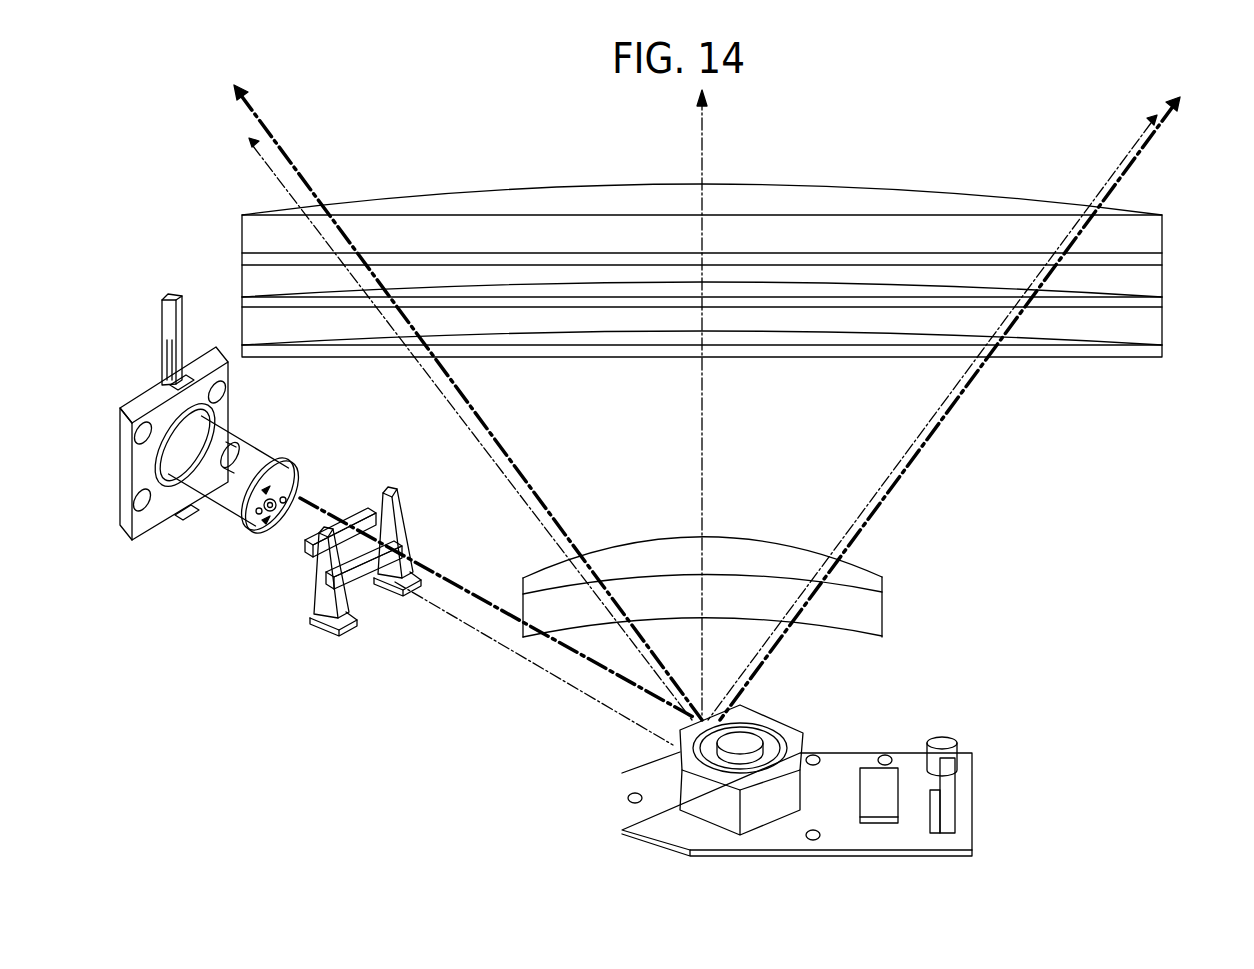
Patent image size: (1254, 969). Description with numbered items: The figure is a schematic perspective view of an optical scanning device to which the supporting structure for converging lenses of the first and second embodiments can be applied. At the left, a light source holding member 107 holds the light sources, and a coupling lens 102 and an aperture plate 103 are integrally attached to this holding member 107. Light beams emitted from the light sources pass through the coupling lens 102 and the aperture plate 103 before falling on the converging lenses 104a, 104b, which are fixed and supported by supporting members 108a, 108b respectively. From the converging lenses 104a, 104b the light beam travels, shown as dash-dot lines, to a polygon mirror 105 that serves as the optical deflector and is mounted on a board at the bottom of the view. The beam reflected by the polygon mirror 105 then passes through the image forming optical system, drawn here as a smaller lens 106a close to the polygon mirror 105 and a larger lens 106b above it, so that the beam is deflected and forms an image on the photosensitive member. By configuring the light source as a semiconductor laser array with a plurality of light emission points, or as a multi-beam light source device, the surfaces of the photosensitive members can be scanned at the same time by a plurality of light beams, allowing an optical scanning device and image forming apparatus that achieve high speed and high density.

The coupling lens 102 is at (247, 462).
The aperture plate 103 is at (288, 473).
The converging lens 104a is at (338, 509).
The converging lens 104b is at (358, 578).
The polygon mirror 105 is at (700, 810).
The image forming optical system 106a is at (870, 617).
The image forming optical system 106b is at (1162, 330).
The light source holding member 107 is at (146, 392).
The supporting member 108a is at (405, 541).
The supporting member 108b is at (322, 583).